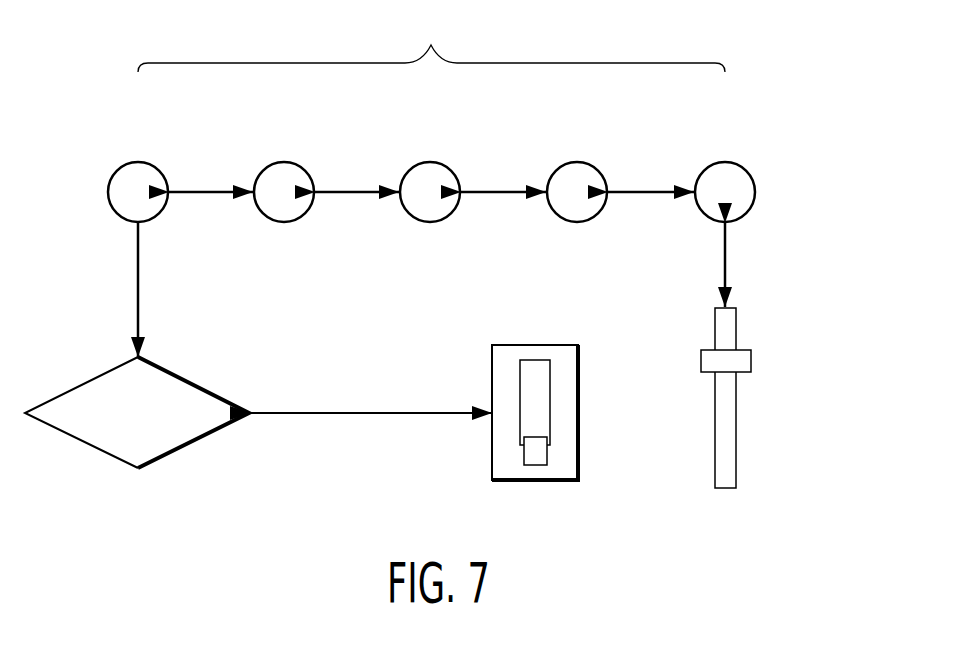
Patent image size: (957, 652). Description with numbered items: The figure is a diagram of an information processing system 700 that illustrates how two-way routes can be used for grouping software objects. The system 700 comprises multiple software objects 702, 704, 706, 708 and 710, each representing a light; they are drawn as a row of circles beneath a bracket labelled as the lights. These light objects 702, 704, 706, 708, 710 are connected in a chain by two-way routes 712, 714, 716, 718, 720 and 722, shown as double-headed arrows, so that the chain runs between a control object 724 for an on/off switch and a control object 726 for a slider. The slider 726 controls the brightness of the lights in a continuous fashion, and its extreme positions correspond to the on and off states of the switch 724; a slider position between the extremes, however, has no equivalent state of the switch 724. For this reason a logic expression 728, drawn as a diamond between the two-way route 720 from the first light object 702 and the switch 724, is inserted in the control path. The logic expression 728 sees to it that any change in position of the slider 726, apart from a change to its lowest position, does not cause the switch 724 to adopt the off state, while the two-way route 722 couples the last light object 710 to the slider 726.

The information processing system 700 is at (840, 65).
The software object 702 is at (134, 174).
The software object 704 is at (290, 174).
The software object 706 is at (430, 174).
The software object 708 is at (585, 174).
The software object 710 is at (731, 174).
The two-way route 712 is at (210, 196).
The two-way route 714 is at (355, 196).
The two-way route 716 is at (500, 196).
The two-way route 718 is at (650, 196).
The two-way route 720 is at (137, 296).
The two-way route 722 is at (727, 272).
The control object 724 is at (504, 438).
The control object 726 is at (752, 366).
The logic expression 728 is at (170, 452).